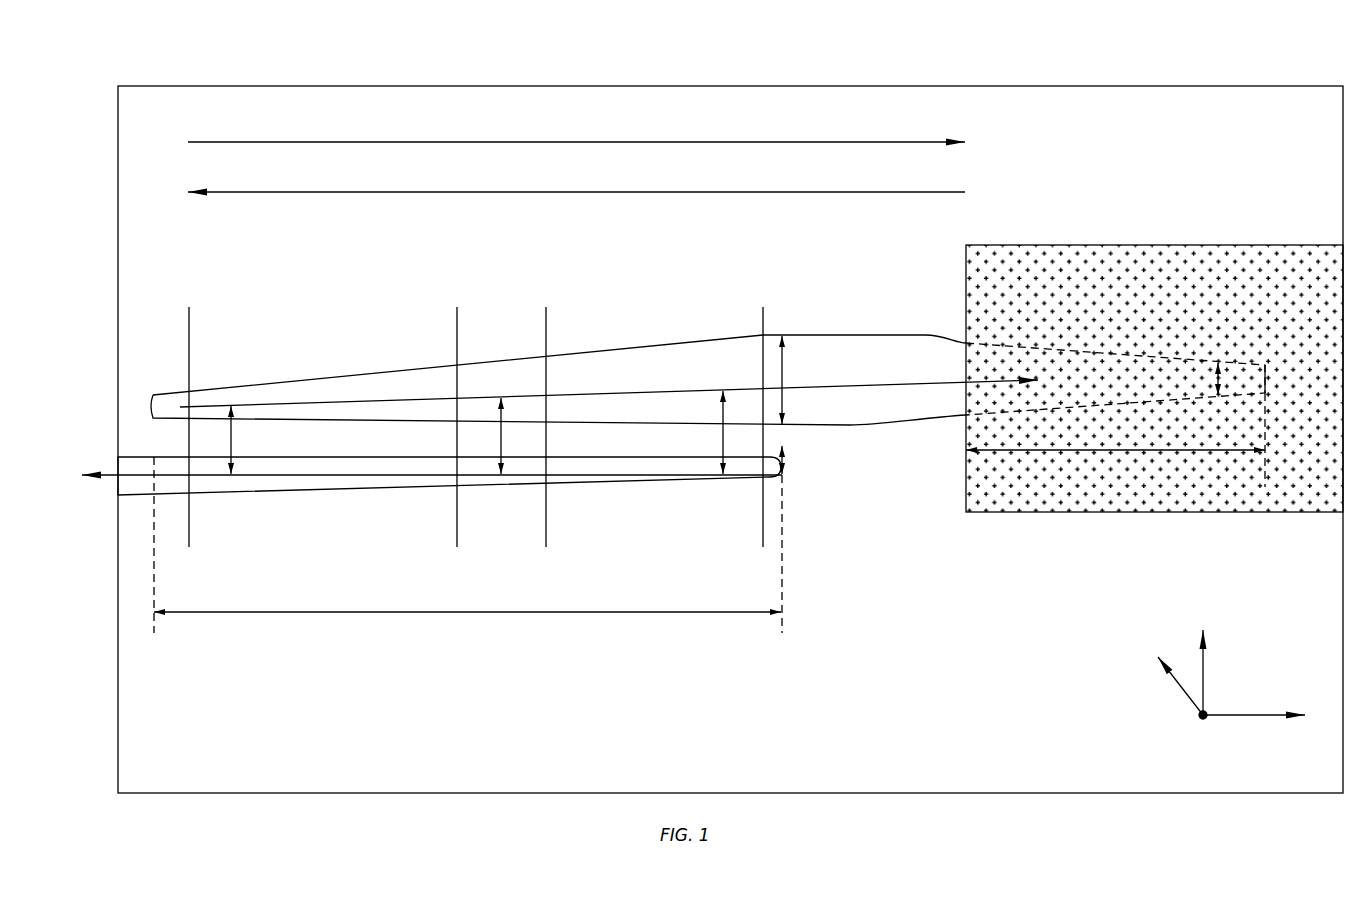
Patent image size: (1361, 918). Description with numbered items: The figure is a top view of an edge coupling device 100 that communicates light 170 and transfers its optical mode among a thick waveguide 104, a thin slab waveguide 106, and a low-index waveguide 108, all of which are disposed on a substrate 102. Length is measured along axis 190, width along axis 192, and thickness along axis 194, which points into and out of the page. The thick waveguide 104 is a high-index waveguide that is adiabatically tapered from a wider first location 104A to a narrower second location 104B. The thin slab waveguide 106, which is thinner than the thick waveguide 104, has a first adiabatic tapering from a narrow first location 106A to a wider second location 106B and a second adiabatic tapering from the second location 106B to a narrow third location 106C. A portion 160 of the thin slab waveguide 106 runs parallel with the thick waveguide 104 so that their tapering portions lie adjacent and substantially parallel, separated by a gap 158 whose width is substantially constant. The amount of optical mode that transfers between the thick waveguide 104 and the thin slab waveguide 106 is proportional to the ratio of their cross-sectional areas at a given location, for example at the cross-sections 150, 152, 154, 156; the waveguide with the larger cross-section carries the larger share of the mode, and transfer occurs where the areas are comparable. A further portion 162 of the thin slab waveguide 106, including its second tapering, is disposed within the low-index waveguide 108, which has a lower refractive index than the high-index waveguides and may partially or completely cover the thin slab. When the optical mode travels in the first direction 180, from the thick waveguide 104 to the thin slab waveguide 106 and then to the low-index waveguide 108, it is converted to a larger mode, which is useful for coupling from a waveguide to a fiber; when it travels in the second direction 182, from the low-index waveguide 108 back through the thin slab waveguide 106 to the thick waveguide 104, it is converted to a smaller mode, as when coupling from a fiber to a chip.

The edge coupling device 100 is at (108, 48).
The substrate 102 is at (762, 763).
The thick waveguide 104 is at (364, 489).
The first location 104A is at (145, 470).
The second location 104B is at (786, 472).
The thin slab waveguide 106 is at (366, 374).
The first location 106A is at (152, 407).
The second location 106B is at (786, 360).
The third location 106C is at (1225, 380).
The low-index waveguide 108 is at (1155, 246).
The cross-section 150 is at (193, 314).
The cross-section 152 is at (455, 314).
The cross-section 154 is at (544, 314).
The cross-section 156 is at (761, 314).
The gap 158 is at (786, 442).
The portion 160 is at (469, 613).
The portion 162 is at (1118, 453).
The light 170 is at (107, 480).
The first direction 180 is at (578, 142).
The second direction 182 is at (578, 192).
The axis 190 is at (1257, 718).
The axis 192 is at (1207, 668).
The axis 194 is at (1180, 698).